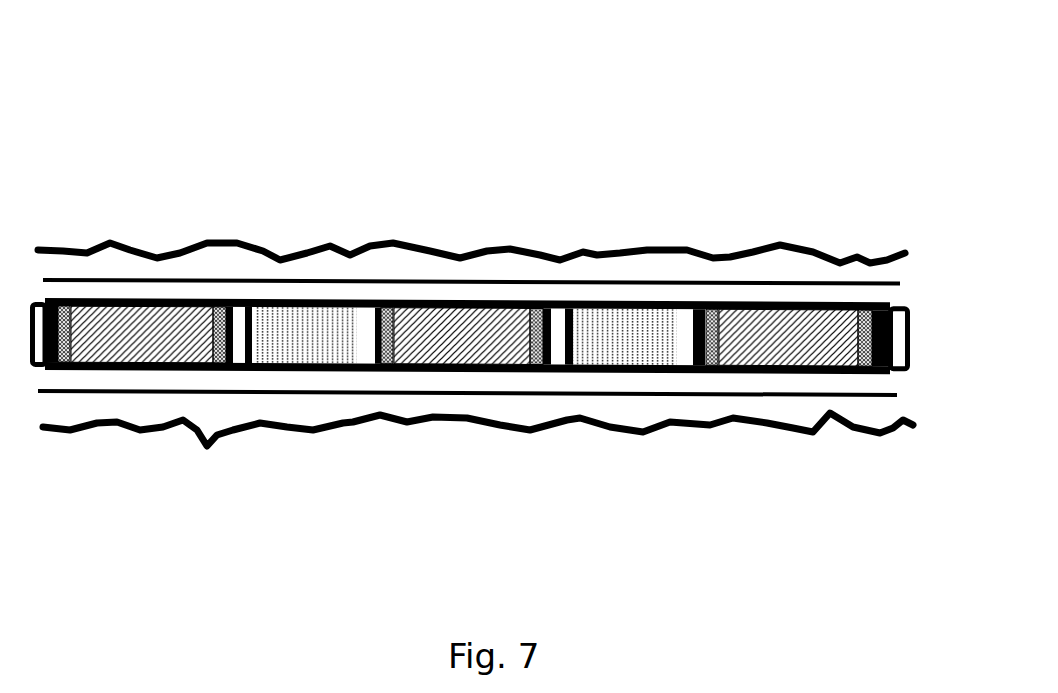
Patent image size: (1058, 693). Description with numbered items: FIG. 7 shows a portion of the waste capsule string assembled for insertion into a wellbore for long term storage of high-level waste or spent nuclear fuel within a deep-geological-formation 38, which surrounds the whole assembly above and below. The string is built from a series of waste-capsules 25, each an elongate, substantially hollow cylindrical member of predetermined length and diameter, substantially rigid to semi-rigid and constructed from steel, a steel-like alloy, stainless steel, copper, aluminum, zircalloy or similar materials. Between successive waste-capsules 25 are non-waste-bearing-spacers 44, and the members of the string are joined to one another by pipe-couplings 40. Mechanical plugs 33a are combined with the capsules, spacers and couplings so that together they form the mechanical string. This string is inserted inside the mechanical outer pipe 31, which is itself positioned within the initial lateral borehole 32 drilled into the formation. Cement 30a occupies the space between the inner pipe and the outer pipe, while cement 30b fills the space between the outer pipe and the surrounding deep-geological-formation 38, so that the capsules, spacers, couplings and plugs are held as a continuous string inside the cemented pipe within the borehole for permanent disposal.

The waste-capsule 25 is at (160, 308).
The cement 30a is at (305, 293).
The cement 30b is at (422, 268).
The outer pipe 31 is at (175, 393).
The initial lateral borehole 32 is at (718, 253).
The mechanical plug 33a is at (390, 347).
The deep-geological-formation 38 is at (394, 63).
The pipe-coupling 40 is at (688, 355).
The non-waste-bearing-spacer 44 is at (600, 327).